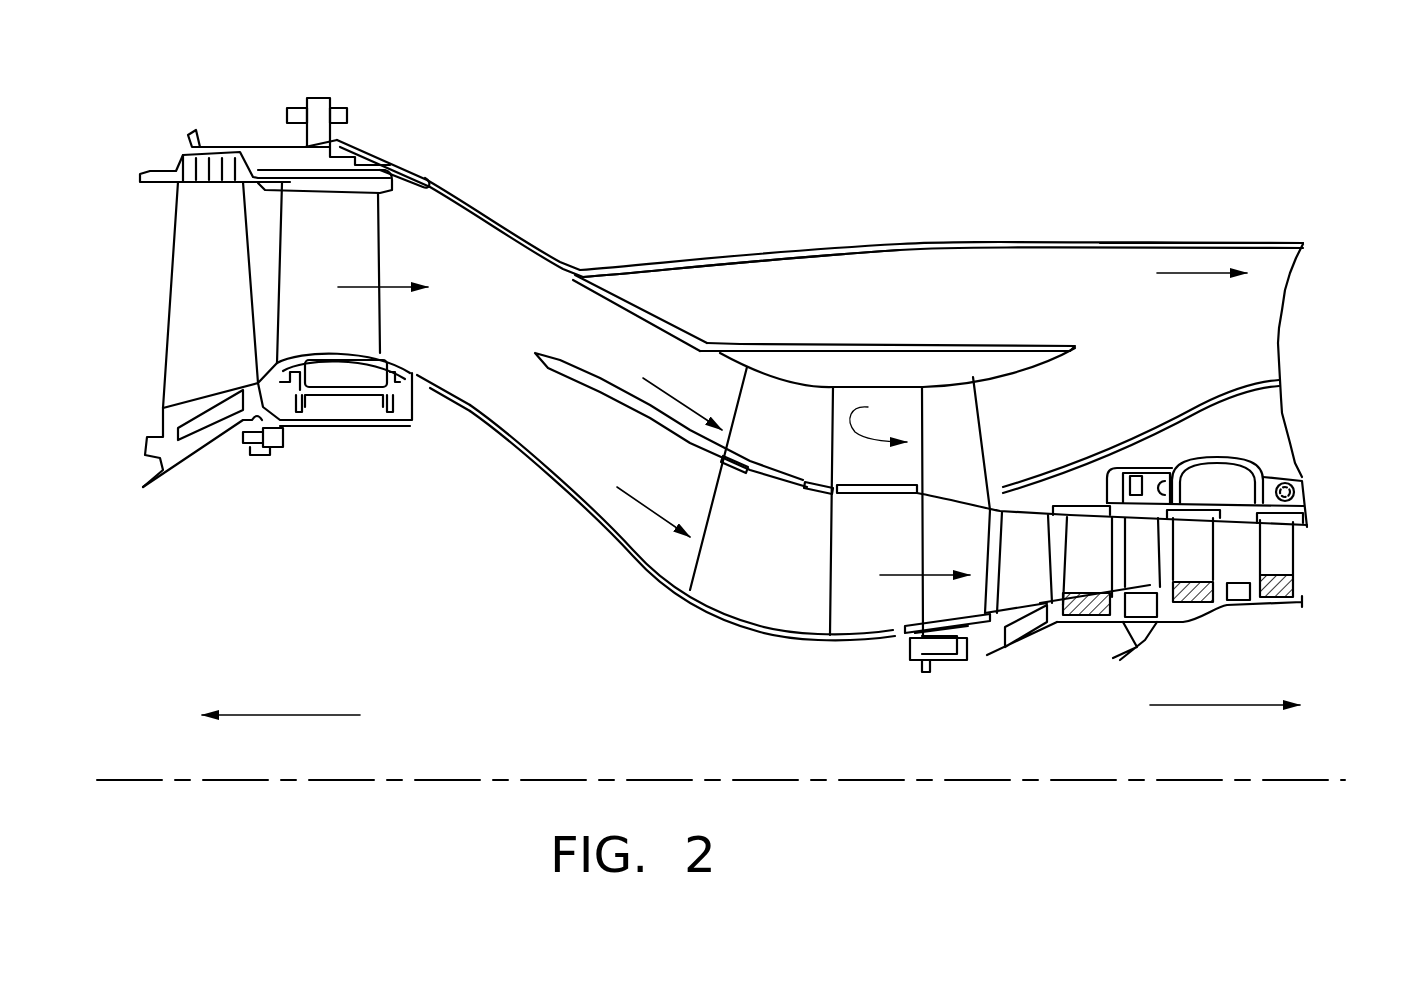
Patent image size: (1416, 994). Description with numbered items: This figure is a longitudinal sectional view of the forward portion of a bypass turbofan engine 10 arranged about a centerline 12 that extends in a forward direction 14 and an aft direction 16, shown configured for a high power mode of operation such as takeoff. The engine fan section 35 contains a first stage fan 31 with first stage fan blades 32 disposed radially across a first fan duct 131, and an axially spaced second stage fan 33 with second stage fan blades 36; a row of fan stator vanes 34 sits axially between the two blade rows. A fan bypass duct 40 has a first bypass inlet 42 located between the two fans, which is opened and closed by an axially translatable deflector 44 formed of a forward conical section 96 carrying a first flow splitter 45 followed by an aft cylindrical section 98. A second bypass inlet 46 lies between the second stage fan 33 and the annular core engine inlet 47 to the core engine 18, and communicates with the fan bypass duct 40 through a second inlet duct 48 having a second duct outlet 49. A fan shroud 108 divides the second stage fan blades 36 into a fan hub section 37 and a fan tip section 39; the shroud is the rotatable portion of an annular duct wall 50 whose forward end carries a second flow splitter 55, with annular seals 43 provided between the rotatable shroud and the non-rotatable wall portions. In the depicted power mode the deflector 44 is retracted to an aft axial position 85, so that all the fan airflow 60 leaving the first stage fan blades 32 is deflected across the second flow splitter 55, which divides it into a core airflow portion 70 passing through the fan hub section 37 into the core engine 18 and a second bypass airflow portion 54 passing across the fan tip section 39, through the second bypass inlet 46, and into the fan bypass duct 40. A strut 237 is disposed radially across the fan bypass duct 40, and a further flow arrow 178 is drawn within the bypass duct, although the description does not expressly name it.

The bypass turbofan engine 10 is at (900, 132).
The centerline 12 is at (985, 783).
The forward direction 14 is at (307, 715).
The aft direction 16 is at (1252, 705).
The core engine 18 is at (1307, 477).
The first stage fan 31 is at (207, 447).
The first stage fan blades 32 is at (230, 318).
The second stage fan 33 is at (743, 615).
The fan stator vanes 34 is at (345, 240).
The engine fan section 35 is at (522, 200).
The second stage fan blades 36 is at (710, 503).
The fan hub section 37 is at (740, 575).
The fan tip section 39 is at (795, 385).
The fan bypass duct 40 is at (1267, 270).
The first bypass inlet 42 is at (673, 293).
The annular seals 43 is at (727, 455).
The deflector 44 is at (690, 343).
The first flow splitter 45 is at (593, 282).
The second bypass inlet 46 is at (886, 512).
The annular core engine inlet 47 is at (950, 588).
The second inlet duct 48 is at (1025, 430).
The second duct outlet 49 is at (1122, 387).
The annular duct wall 50 is at (887, 497).
The second bypass airflow portion 54 is at (673, 393).
The second flow splitter 55 is at (570, 365).
The fan airflow 60 is at (387, 290).
The core airflow portion 70 is at (633, 497).
The aft axial position 85 is at (618, 320).
The forward conical section 96 is at (642, 308).
The aft cylindrical section 98 is at (842, 340).
The fan shroud 108 is at (753, 490).
The first fan duct 131 is at (267, 225).
The bypass flow 178 is at (1182, 270).
The struts 237 is at (975, 482).